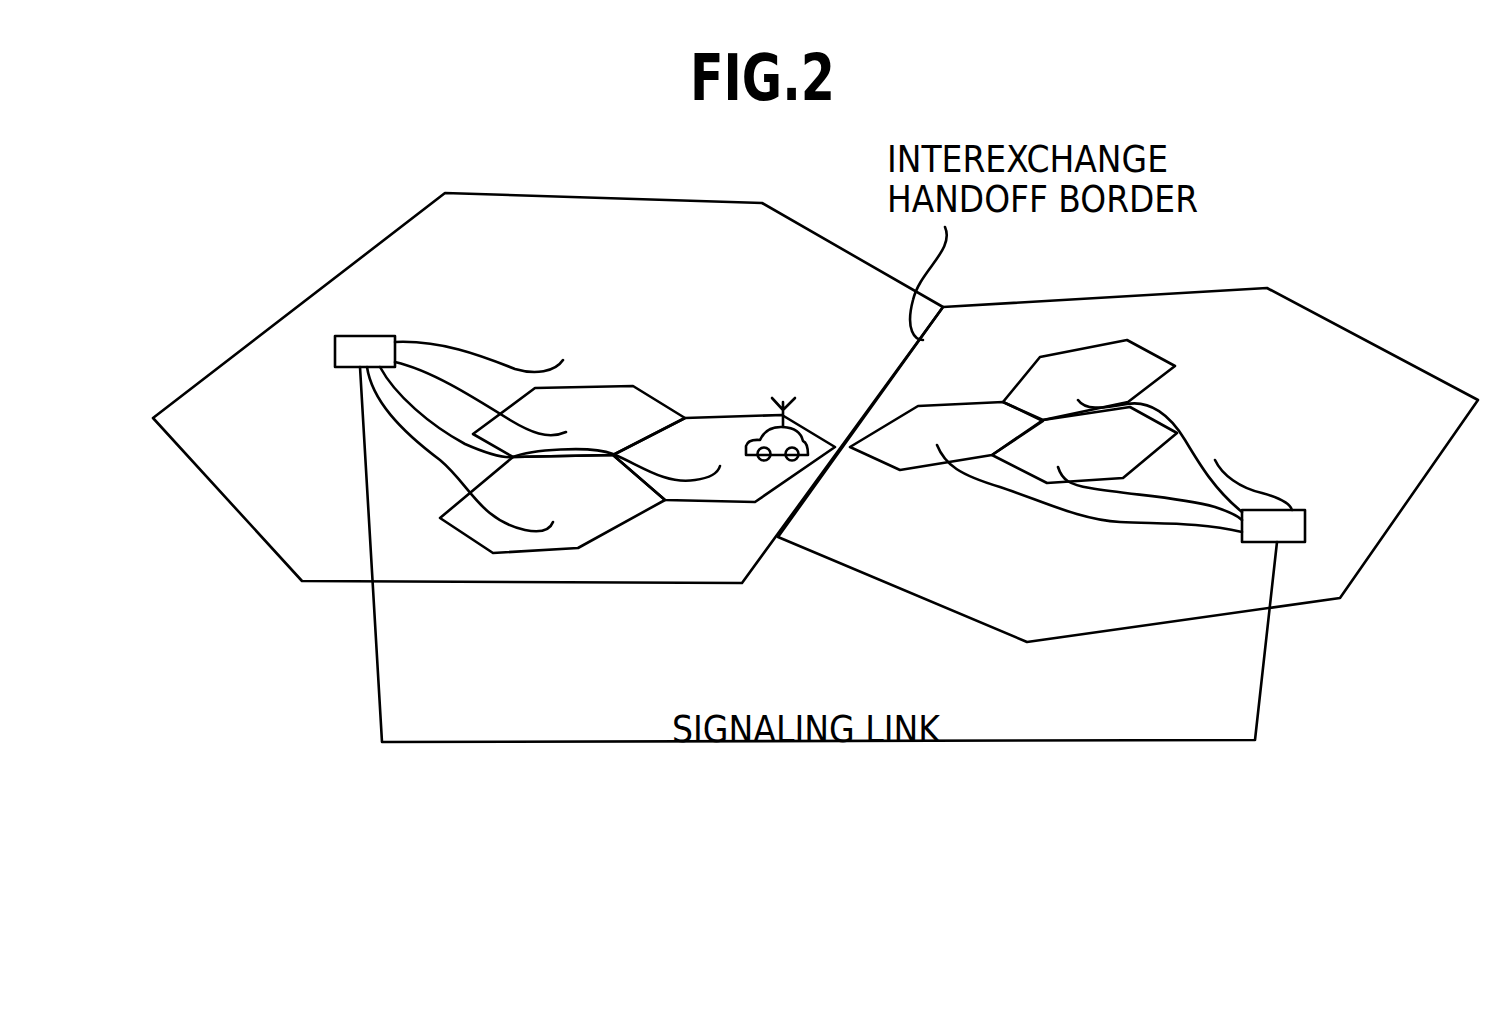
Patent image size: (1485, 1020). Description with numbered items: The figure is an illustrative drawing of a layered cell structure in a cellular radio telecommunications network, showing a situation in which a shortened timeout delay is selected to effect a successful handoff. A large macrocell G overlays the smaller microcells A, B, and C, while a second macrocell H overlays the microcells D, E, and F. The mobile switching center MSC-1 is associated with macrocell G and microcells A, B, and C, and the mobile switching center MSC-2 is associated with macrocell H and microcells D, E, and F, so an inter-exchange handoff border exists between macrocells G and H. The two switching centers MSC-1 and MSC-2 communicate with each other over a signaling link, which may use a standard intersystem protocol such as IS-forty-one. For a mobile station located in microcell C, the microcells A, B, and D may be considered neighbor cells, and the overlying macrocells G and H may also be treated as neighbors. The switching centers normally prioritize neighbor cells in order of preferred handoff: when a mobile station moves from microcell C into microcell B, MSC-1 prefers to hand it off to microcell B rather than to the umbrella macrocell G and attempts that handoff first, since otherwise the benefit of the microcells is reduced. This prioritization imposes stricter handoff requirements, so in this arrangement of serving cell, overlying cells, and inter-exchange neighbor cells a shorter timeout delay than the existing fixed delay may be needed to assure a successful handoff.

The microcell A is at (829, 441).
The microcell B is at (579, 421).
The microcell C is at (724, 450).
The microcell D is at (946, 436).
The microcell E is at (1089, 380).
The microcell F is at (1084, 445).
The macrocell G is at (548, 388).
The macrocell H is at (1128, 465).
The mobile switching center MSC-1 is at (335, 338).
The mobile switching center MSC-2 is at (1328, 497).